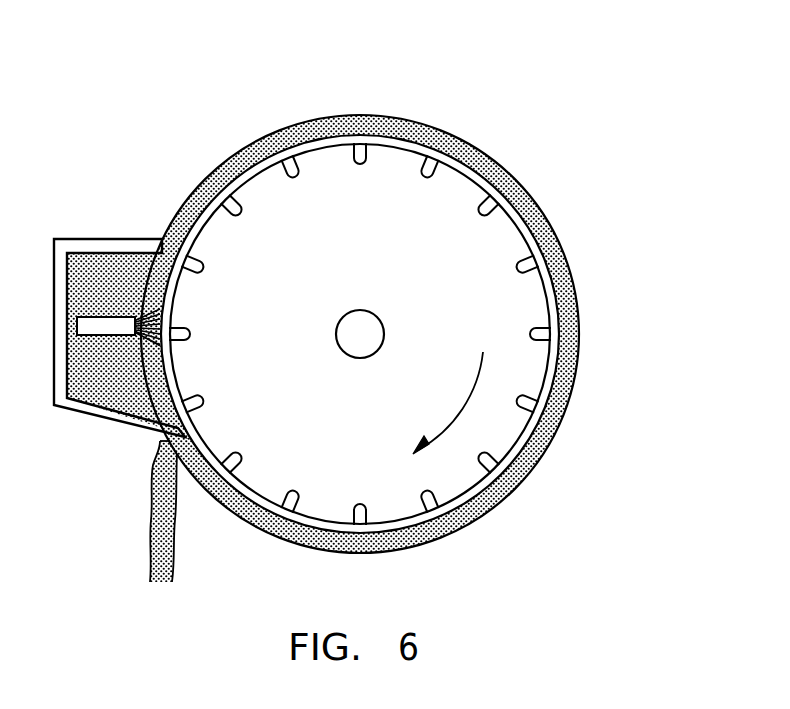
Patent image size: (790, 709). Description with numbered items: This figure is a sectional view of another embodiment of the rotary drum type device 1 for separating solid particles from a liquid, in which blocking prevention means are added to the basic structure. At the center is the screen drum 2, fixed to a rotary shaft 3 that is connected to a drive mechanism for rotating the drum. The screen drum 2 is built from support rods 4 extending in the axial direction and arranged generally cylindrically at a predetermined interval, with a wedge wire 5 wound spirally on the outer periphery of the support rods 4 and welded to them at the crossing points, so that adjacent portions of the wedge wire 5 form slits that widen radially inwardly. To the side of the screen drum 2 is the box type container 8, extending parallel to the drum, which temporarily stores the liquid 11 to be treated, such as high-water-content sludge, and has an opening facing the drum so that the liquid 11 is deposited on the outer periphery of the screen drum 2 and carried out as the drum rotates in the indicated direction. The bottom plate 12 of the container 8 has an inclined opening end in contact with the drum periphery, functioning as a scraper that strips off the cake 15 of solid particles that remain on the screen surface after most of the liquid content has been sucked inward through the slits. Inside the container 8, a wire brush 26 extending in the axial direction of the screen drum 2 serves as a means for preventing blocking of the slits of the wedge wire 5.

The rotary drum type device 1 is at (341, 301).
The screen drum 2 is at (493, 317).
The rotary shaft 3 is at (380, 311).
The support rods 4 is at (237, 183).
The wedge wire 5 is at (308, 120).
The box type container 8 is at (77, 246).
The liquid to be treated 11 is at (123, 317).
The bottom plate 12 is at (137, 423).
The cake 15 is at (538, 195).
The wire brush 26 is at (93, 327).